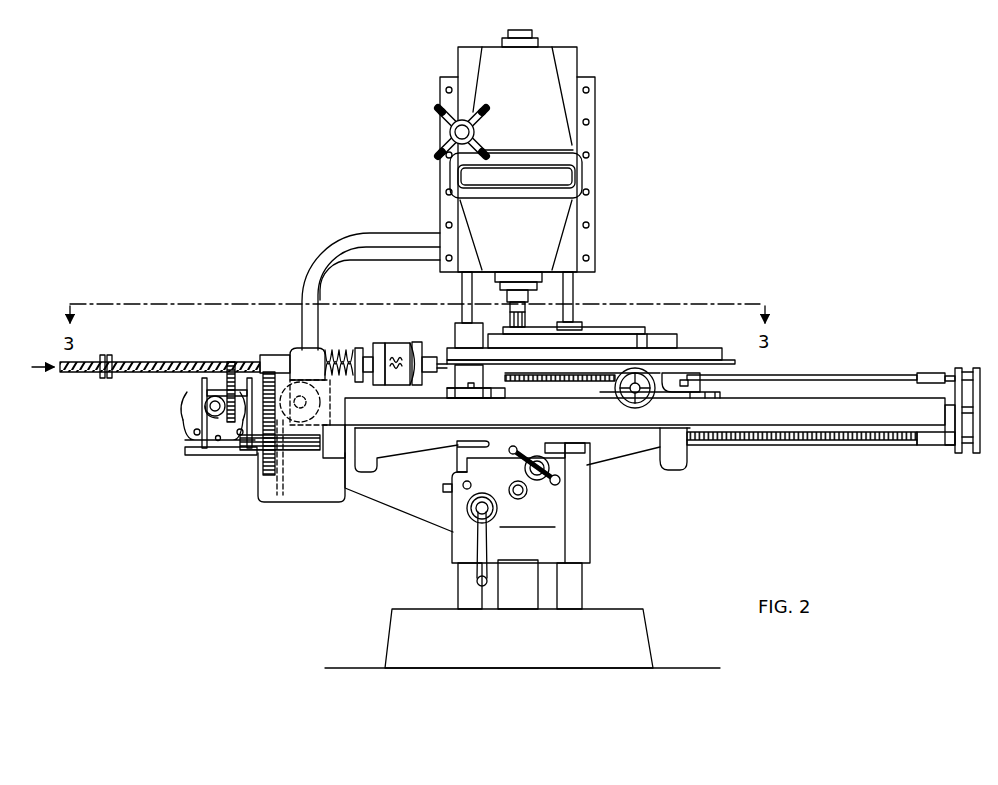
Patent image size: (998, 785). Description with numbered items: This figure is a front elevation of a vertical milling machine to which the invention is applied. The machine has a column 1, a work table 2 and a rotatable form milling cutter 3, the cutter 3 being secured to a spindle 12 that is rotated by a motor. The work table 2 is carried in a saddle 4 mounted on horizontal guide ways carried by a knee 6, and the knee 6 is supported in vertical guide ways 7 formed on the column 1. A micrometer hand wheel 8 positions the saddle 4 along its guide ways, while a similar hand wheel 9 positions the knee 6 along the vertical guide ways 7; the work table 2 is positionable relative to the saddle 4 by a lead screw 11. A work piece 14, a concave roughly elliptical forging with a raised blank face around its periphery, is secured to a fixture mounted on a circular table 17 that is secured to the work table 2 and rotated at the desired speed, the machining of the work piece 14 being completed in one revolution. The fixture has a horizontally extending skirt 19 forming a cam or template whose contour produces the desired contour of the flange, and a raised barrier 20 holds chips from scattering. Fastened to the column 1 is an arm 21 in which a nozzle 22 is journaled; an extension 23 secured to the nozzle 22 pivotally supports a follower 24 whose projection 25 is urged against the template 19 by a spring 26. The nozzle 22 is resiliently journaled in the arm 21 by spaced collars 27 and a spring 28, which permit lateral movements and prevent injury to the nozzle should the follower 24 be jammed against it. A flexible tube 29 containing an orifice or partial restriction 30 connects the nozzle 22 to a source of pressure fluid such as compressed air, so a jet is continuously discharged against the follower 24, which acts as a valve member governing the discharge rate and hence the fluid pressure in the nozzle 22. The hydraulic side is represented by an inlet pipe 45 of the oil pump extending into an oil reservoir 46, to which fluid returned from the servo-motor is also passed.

The column 1 is at (521, 180).
The work table 2 is at (838, 397).
The form milling cutter 3 is at (527, 323).
The saddle 4 is at (640, 457).
The knee 6 is at (590, 522).
The vertical guide ways 7 is at (457, 593).
The micrometer hand wheel 8 is at (537, 482).
The hand wheel 9 is at (475, 570).
The lead screw 11 is at (810, 440).
The spindle 12 is at (510, 304).
The work piece 14 is at (640, 328).
The circular table 17 is at (510, 388).
The skirt 19 is at (732, 363).
The raised barrier 20 is at (452, 342).
The arm 21 is at (302, 283).
The nozzle 22 is at (414, 343).
The extension 23 is at (375, 343).
The follower 24 is at (430, 356).
The projection 25 is at (432, 373).
The spring 26 is at (392, 348).
The spaced collars 27 is at (292, 350).
The spring 28 is at (328, 347).
The flexible tube 29 is at (158, 373).
The orifice or partial restriction 30 is at (105, 380).
The inlet pipe 45 is at (277, 497).
The oil reservoir 46 is at (328, 505).